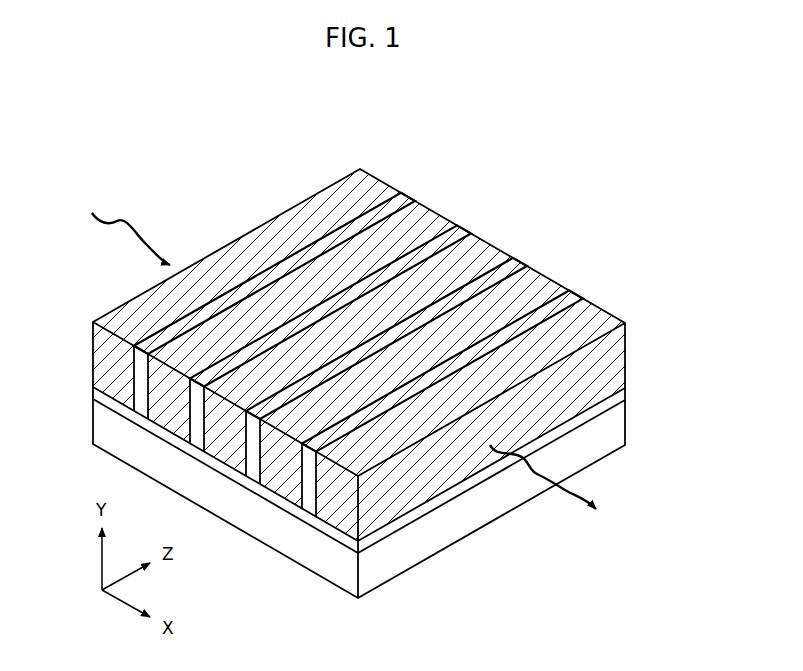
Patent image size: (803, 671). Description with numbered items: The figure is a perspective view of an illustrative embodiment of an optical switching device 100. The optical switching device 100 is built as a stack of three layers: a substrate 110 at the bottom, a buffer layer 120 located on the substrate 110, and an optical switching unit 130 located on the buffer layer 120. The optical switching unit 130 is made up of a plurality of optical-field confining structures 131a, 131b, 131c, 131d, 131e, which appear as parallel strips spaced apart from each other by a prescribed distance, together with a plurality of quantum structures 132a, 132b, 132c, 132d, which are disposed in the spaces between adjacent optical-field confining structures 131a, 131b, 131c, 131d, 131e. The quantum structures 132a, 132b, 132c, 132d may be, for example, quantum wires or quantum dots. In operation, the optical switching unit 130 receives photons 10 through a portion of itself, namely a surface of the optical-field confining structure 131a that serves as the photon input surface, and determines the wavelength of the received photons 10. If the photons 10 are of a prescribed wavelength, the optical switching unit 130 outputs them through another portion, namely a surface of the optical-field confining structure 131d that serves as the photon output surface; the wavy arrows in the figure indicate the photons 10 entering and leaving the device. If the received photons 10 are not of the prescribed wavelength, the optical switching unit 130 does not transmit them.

The photons 10 is at (120, 222).
The optical switching device 100 is at (666, 307).
The substrate 110 is at (93, 431).
The buffer layer 120 is at (93, 399).
The optical switching unit 130 is at (93, 358).
The optical-field confining structure 131a is at (378, 178).
The optical-field confining structure 131b is at (437, 211).
The optical-field confining structure 131c is at (493, 244).
The optical-field confining structure 131d is at (549, 276).
The optical-field confining structure 131e is at (608, 311).
The quantum structure 132a is at (406, 194).
The quantum structure 132b is at (463, 226).
The quantum structure 132c is at (519, 260).
The quantum structure 132d is at (575, 291).